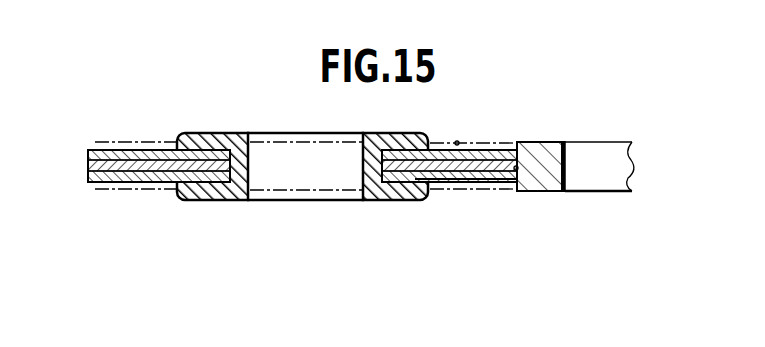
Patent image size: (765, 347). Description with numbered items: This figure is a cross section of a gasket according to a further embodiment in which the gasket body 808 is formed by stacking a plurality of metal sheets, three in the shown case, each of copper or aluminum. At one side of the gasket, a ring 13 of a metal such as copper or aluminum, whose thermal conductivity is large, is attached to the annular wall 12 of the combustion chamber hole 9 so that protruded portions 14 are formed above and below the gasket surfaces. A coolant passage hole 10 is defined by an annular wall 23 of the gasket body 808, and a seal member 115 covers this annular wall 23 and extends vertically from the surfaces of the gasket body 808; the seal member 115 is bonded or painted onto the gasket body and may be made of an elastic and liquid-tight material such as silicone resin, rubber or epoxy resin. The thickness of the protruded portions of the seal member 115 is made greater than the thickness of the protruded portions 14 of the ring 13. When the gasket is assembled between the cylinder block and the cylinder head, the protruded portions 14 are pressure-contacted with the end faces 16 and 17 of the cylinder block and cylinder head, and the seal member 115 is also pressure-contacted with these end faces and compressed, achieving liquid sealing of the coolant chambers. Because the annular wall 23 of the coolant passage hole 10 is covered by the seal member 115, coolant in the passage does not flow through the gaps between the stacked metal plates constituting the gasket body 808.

The combustion chamber hole 9 is at (608, 185).
The coolant passage hole 10 is at (290, 185).
The annular wall 12 is at (513, 166).
The ring 13 is at (548, 192).
The protruded portions 14 is at (538, 141).
The end face 16 is at (433, 187).
The end face 17 is at (457, 141).
The annular wall 23 is at (357, 188).
The seal member 115 is at (205, 200).
The gasket body 808 is at (456, 179).